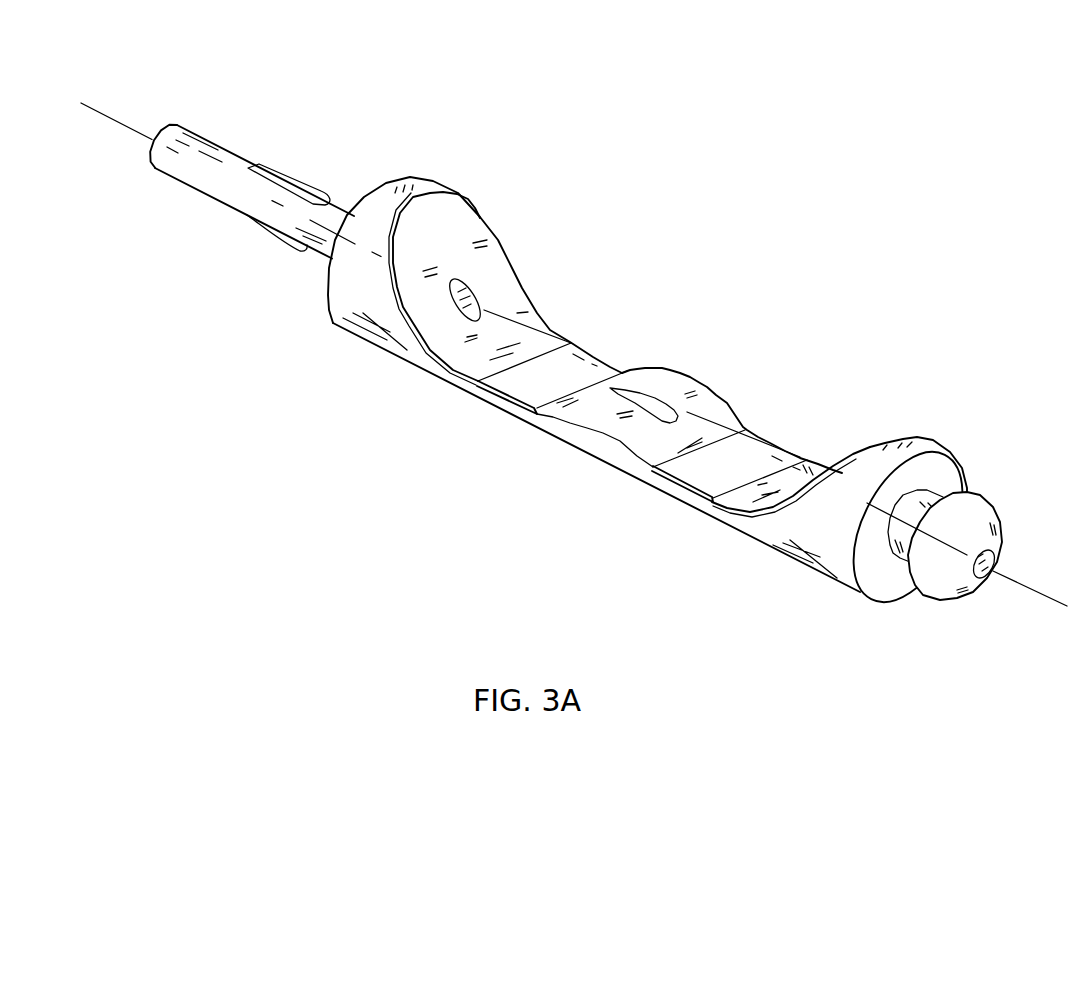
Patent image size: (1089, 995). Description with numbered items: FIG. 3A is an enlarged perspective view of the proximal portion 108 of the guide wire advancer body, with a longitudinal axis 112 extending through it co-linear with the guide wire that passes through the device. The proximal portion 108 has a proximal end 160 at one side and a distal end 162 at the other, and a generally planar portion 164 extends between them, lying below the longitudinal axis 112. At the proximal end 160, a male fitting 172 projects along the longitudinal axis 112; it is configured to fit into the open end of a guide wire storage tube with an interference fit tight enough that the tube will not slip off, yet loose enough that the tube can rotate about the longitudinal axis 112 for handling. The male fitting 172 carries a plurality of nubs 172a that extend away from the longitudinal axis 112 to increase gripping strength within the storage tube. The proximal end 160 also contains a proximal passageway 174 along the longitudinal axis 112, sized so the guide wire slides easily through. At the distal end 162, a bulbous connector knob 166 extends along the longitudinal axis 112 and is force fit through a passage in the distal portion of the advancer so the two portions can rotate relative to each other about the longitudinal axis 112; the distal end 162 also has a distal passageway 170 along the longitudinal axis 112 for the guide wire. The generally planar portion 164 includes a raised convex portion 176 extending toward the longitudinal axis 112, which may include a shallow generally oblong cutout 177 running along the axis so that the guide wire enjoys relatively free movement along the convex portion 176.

The proximal portion 108 is at (579, 356).
The longitudinal axis 112 is at (122, 114).
The proximal end 160 is at (323, 298).
The distal end 162 is at (837, 588).
The generally planar portion 164 is at (477, 402).
The bulbous connector knob 166 is at (993, 498).
The distal passageway 170 is at (992, 577).
The male fitting 172 is at (220, 137).
The nubs 172a is at (300, 175).
The proximal passageway 174 is at (480, 288).
The raised convex portion 176 is at (702, 375).
The shallow generally oblong cutout 177 is at (665, 423).